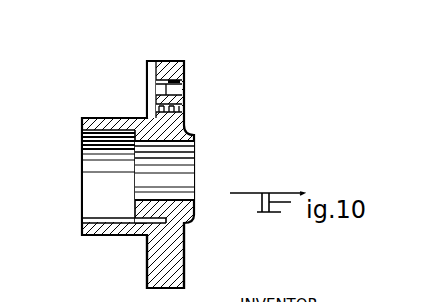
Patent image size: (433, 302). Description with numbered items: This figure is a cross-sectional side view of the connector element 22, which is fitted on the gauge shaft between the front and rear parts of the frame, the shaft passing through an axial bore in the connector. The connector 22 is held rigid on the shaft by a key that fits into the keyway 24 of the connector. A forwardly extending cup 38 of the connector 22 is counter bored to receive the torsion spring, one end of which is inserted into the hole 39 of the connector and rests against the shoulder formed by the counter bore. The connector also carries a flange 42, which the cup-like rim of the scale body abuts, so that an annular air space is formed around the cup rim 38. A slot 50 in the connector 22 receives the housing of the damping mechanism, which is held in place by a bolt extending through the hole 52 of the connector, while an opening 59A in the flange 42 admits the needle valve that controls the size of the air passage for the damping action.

The connector element 22 is at (185, 60).
The slot 50 is at (153, 96).
The hole 52 is at (178, 89).
The opening 59A is at (182, 110).
The keyway 24 is at (195, 156).
The forwardly extending cup 38 is at (92, 237).
The hole 39 is at (143, 224).
The flange 42 is at (183, 261).